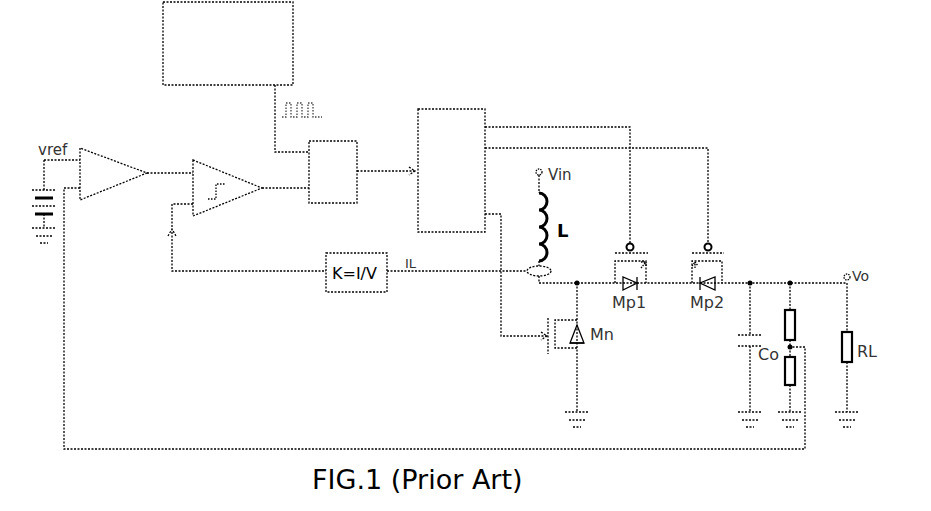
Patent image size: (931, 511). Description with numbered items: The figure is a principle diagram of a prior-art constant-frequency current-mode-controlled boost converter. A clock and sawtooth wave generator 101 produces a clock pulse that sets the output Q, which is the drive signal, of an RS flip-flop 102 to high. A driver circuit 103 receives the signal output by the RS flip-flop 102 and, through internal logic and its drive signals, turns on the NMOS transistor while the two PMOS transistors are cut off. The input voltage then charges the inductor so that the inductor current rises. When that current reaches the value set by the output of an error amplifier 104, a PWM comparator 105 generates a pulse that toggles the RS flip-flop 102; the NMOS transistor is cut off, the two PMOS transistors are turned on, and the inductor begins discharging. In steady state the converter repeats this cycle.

The clock and sawtooth wave generator 101 is at (293, 36).
The RS flip-flop 102 is at (333, 142).
The driver circuit 103 is at (453, 108).
The error amplifier 104 is at (107, 160).
The PWM comparator 105 is at (193, 185).